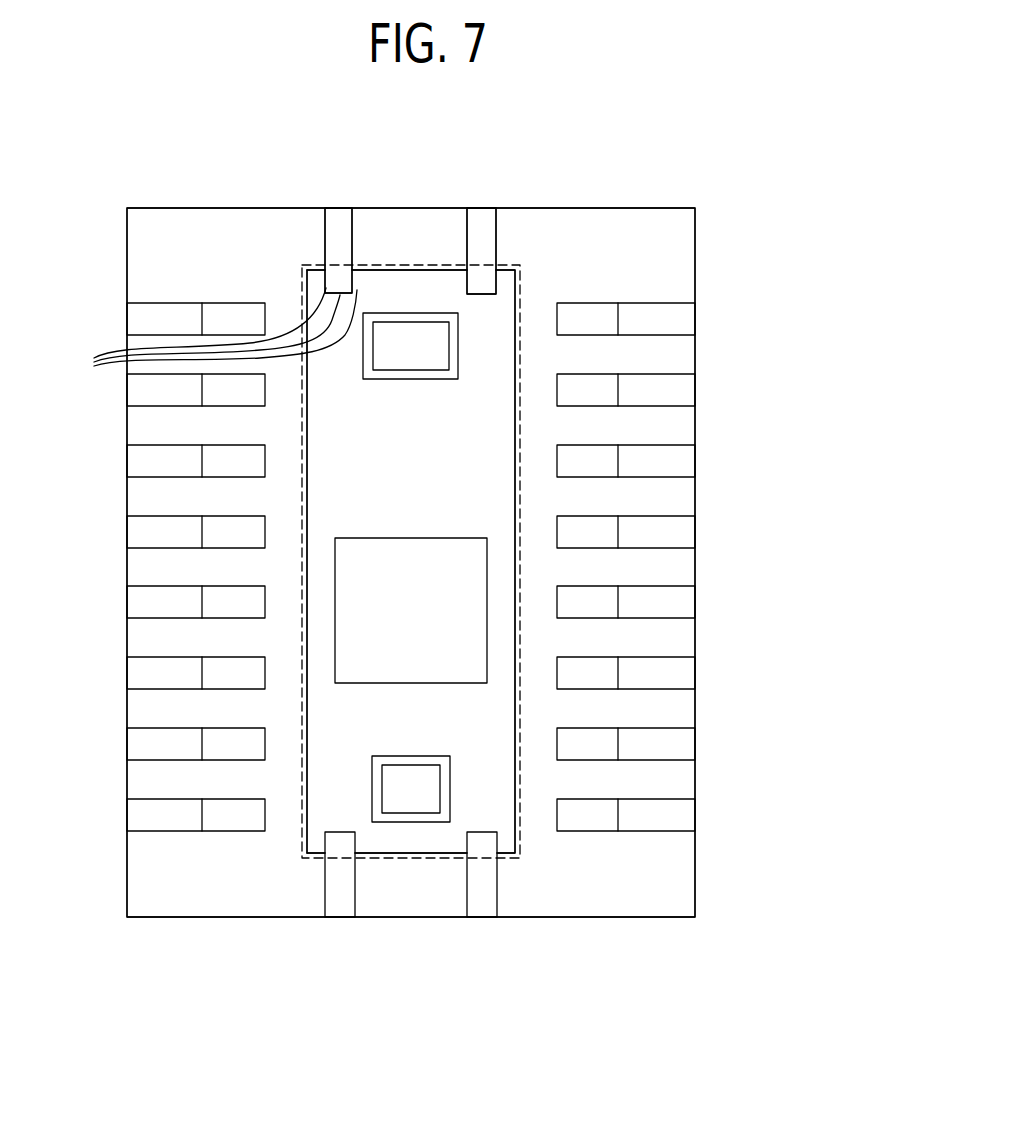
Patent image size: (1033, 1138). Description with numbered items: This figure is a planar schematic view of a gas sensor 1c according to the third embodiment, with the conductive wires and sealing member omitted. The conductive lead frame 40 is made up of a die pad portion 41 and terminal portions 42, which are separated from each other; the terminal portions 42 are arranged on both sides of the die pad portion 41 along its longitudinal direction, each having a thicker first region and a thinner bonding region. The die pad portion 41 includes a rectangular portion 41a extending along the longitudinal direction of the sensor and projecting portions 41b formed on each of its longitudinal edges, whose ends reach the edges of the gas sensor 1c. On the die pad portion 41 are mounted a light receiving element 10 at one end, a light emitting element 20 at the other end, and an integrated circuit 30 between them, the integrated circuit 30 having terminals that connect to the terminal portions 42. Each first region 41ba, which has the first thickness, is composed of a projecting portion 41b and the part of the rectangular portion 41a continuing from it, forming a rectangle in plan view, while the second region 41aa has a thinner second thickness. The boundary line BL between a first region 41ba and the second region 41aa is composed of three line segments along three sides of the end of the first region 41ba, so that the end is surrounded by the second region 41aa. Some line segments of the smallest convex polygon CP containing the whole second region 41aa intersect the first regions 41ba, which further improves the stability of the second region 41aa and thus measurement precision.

The gas sensor 1c is at (663, 176).
The light receiving element 10 is at (410, 798).
The light emitting element 20 is at (437, 343).
The integrated circuit 30 is at (457, 568).
The conductive lead frame 40 is at (253, 981).
The die pad portion 41 is at (318, 843).
The rectangular portion 41a is at (410, 285).
The second region 41aa is at (477, 418).
The projecting portion 41b is at (480, 225).
The first region 41ba is at (338, 225).
The terminal portion 42 is at (165, 318).
The boundary line BL is at (211, 333).
The smallest convex polygon CP is at (520, 840).